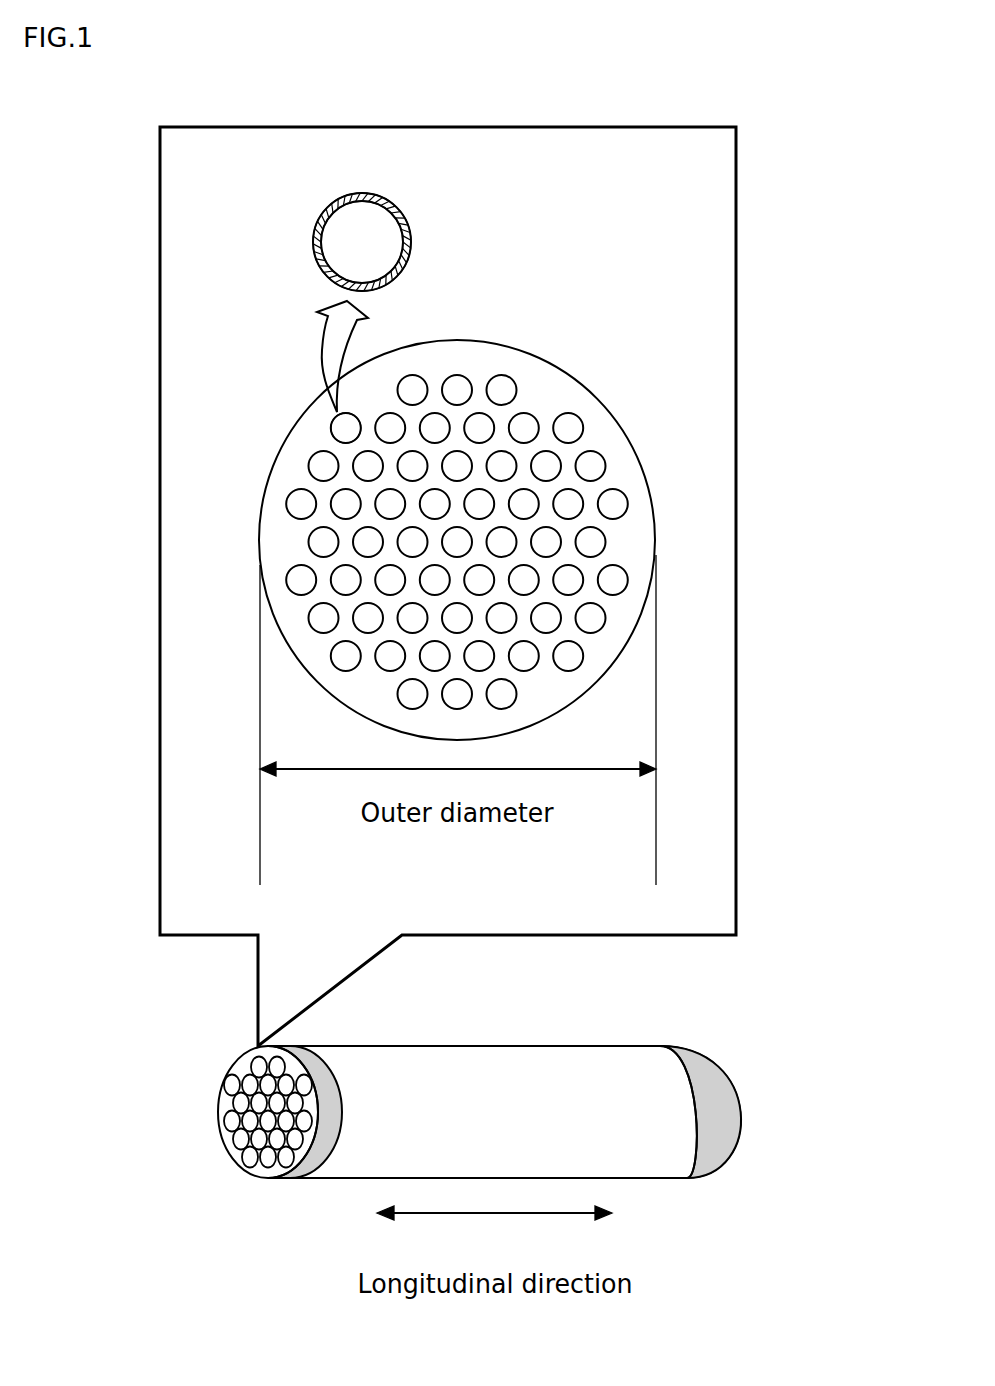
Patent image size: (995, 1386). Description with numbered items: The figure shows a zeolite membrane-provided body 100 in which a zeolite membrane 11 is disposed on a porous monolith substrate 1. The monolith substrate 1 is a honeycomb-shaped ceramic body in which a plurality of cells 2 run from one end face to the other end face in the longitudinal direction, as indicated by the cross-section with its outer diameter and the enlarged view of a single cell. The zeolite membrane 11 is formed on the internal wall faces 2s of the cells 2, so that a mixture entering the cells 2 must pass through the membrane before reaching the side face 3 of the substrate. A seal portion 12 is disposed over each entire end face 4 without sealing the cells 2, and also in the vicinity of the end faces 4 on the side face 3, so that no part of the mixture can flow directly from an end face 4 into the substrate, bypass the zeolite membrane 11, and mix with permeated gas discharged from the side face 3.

The zeolite membrane-provided body 100 is at (688, 1033).
The monolith substrate 1 is at (550, 392).
The cells 2 is at (353, 255).
The internal wall faces 2s is at (328, 208).
The zeolite membrane 11 is at (410, 243).
The side face 3 is at (638, 1168).
The end faces 4 is at (733, 1072).
The seal portion 12 is at (270, 1177).